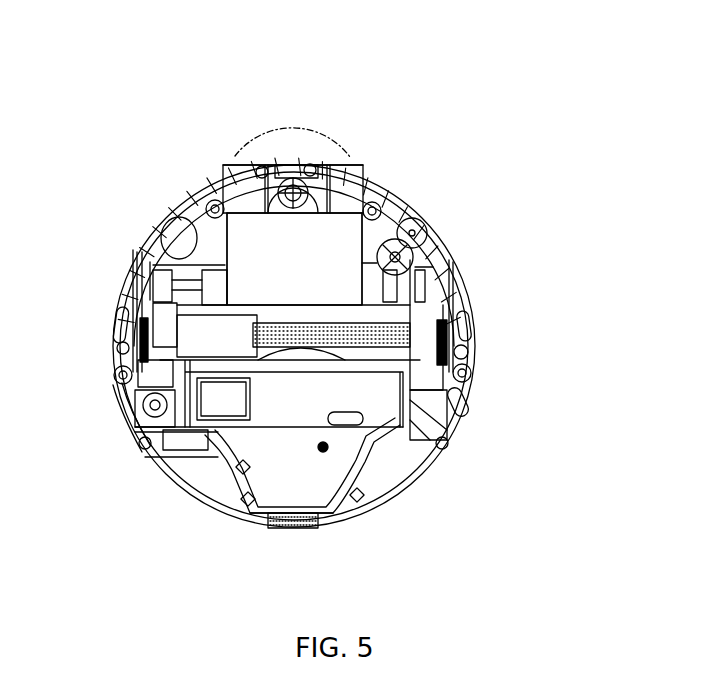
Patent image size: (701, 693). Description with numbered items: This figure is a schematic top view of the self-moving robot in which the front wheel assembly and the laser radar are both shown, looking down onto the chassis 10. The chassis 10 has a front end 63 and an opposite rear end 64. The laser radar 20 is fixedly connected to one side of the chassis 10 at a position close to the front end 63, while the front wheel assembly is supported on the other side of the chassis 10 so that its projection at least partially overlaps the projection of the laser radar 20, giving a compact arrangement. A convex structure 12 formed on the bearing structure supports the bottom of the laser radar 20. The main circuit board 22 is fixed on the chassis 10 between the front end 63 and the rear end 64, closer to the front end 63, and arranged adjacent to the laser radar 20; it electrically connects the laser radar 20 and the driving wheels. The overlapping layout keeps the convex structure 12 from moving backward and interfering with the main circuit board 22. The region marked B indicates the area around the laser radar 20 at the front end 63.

The chassis 10 is at (472, 413).
The convex structure 12 is at (273, 160).
The laser radar 20 is at (307, 157).
The main circuit board 22 is at (340, 293).
The front end 63 is at (257, 160).
The rear end 64 is at (312, 533).
The region B is at (285, 130).